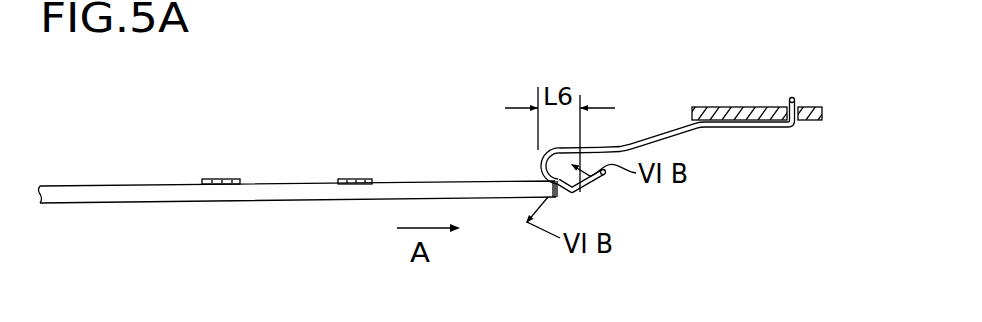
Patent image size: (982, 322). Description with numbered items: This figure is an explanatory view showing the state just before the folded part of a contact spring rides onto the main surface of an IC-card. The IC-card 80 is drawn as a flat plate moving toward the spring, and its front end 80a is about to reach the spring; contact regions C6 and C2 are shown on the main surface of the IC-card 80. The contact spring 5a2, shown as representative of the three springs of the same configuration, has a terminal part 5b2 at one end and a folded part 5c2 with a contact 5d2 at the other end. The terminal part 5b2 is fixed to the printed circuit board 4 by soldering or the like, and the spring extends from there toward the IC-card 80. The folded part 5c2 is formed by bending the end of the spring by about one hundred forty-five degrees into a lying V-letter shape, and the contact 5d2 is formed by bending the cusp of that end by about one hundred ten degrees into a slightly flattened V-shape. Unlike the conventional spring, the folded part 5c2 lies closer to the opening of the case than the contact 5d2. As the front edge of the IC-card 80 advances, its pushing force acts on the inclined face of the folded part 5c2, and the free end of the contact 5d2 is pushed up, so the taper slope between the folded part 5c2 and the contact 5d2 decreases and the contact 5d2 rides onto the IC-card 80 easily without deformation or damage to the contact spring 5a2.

The IC-card 80 is at (265, 192).
The front end of the IC-card 80a is at (575, 197).
The contact region C6 is at (225, 179).
The contact region C2 is at (354, 179).
The printed circuit board 4 is at (816, 121).
The contact spring 5a2 is at (692, 139).
The terminal part 5b2 is at (794, 97).
The folded part 5c2 is at (533, 163).
The contact 5d2 is at (585, 191).